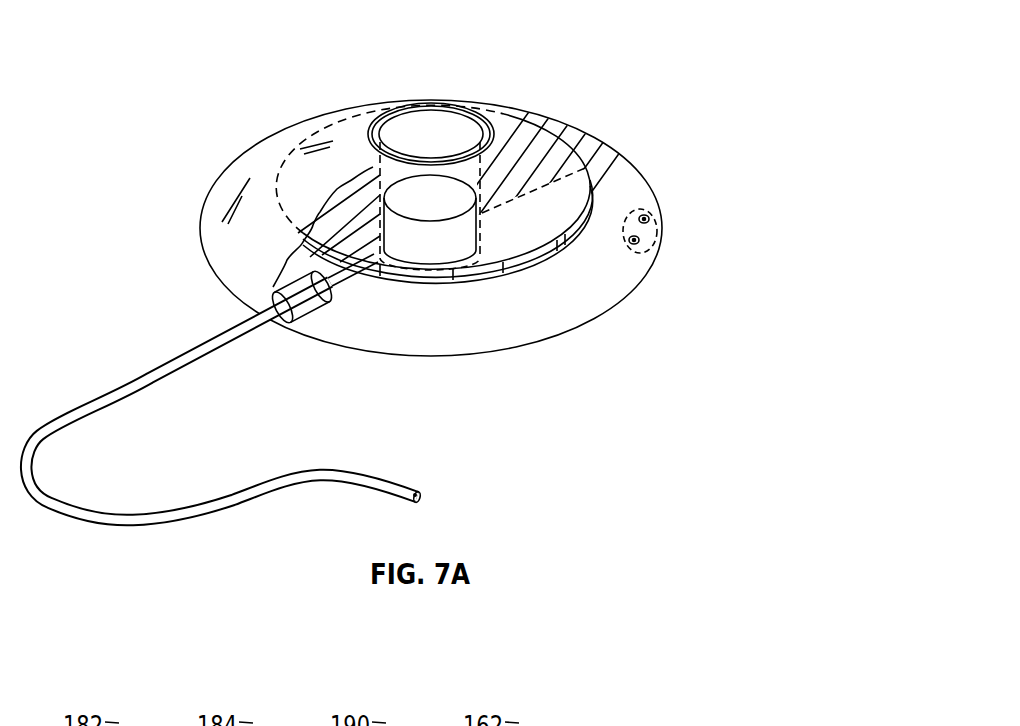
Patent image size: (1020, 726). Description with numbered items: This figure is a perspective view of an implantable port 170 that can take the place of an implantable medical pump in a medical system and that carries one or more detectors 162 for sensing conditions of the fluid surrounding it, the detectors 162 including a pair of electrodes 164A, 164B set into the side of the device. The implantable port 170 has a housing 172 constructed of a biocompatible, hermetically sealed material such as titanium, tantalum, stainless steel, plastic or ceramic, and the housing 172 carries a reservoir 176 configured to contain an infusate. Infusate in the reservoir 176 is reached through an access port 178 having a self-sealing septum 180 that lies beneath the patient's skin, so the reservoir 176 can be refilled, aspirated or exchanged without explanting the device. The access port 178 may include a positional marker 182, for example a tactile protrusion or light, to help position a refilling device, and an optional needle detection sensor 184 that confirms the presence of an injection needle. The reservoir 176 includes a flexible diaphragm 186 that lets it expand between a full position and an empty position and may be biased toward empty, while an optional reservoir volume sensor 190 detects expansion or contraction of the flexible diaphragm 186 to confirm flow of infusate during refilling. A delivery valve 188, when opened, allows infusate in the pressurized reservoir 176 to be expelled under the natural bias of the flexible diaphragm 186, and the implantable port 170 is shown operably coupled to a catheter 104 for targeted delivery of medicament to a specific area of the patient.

The catheter 104 is at (148, 373).
The detectors 162 is at (653, 228).
The electrode 164A is at (647, 220).
The electrode 164B is at (640, 241).
The implantable port 170 is at (640, 33).
The housing 172 is at (567, 197).
The reservoir 176 is at (463, 232).
The access port 178 is at (447, 132).
The self-sealing septum 180 is at (414, 132).
The positional marker 182 is at (377, 130).
The needle detection sensor 184 is at (377, 170).
The flexible diaphragm 186 is at (433, 243).
The delivery valve 188 is at (305, 305).
The reservoir volume sensor 190 is at (550, 142).